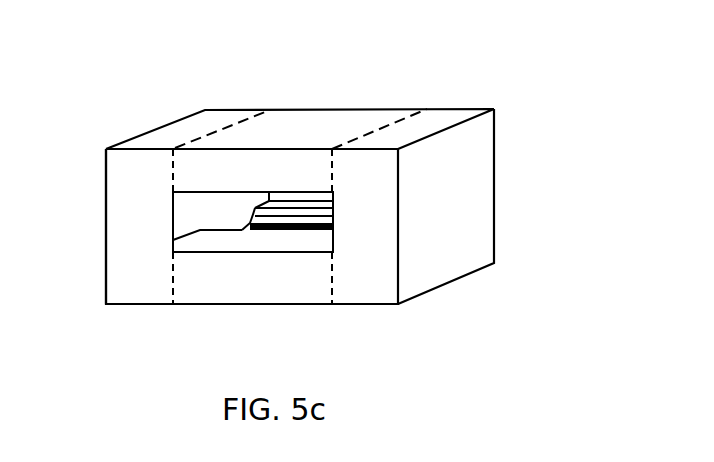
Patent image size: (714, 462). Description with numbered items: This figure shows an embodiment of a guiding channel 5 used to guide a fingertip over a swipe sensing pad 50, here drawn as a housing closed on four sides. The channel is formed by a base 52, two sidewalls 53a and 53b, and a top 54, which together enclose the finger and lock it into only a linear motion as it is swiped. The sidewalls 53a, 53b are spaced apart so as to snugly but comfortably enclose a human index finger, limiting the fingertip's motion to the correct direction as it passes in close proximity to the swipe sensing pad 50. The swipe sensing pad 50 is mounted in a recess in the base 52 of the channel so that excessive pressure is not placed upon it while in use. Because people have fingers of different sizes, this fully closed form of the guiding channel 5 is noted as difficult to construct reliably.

The guiding channel 5 is at (300, 232).
The swipe sensing pad 50 is at (312, 230).
The base 52 is at (223, 283).
The sidewall 53a is at (470, 186).
The sidewall 53b is at (130, 234).
The top 54 is at (310, 116).